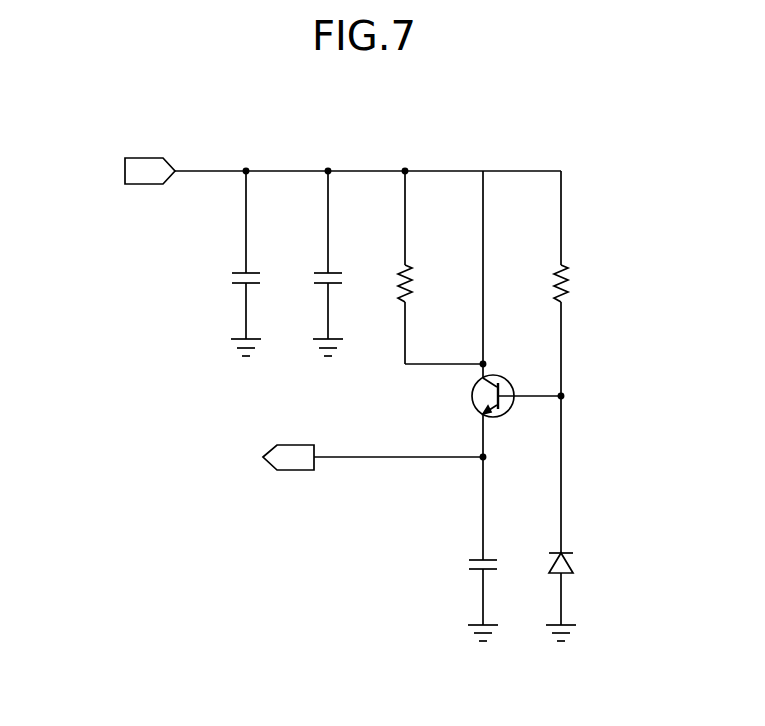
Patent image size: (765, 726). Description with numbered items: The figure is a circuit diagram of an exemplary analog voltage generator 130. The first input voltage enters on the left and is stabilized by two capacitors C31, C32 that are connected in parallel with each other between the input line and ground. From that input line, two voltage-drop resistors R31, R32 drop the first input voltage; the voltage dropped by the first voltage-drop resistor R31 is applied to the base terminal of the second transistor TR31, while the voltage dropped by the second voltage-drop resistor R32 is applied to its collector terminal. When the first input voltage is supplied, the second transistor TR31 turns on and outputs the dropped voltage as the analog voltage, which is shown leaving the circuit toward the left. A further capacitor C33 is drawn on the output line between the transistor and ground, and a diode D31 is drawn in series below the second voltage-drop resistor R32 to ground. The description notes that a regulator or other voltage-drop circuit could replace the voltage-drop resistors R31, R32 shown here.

The analog voltage generator 130 is at (613, 128).
The capacitor C31 is at (223, 262).
The capacitor C32 is at (349, 262).
The third capacitor C33 is at (460, 549).
The voltage-drop resistor R31 is at (440, 266).
The voltage-drop resistor R32 is at (585, 283).
The second transistor TR31 is at (471, 397).
The diode D31 is at (583, 518).